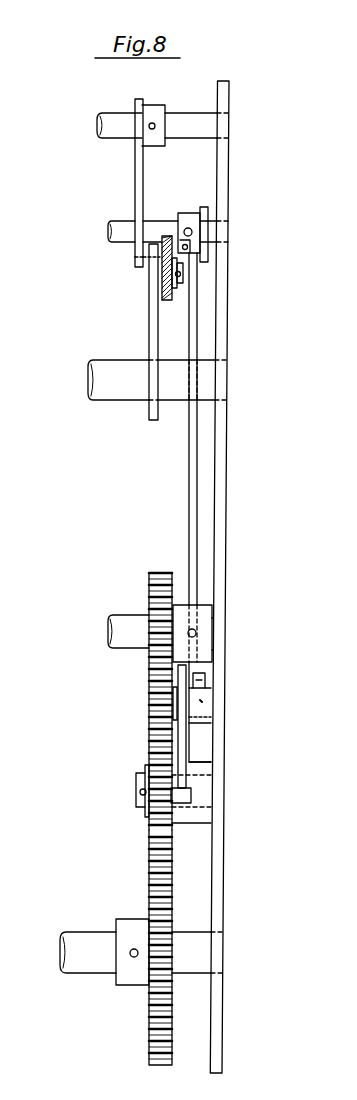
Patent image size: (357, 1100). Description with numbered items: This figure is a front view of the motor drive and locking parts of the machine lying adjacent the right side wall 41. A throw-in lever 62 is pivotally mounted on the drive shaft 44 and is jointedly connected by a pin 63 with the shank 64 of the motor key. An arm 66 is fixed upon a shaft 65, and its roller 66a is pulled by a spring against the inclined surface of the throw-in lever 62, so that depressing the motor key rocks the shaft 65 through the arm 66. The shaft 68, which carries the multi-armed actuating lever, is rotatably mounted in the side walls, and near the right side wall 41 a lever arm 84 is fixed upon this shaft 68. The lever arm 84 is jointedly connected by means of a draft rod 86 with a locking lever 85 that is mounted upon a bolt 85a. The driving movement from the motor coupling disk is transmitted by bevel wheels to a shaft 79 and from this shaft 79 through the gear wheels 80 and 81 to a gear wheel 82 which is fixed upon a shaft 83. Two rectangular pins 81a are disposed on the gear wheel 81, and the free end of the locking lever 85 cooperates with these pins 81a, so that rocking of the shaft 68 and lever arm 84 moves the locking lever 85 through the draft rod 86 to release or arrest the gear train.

The side wall 41 is at (220, 503).
The drive shaft 44 is at (125, 392).
The throw-in lever 62 is at (148, 337).
The pin 63 is at (183, 280).
The shank 64 is at (172, 295).
The shaft 65 is at (110, 125).
The arm 66 is at (138, 190).
The roller 66a is at (145, 255).
The shaft 68 is at (110, 234).
The shaft 79 is at (128, 637).
The gear wheel 80 is at (150, 588).
The gear wheel 81 is at (150, 828).
The rectangular pins 81a is at (185, 797).
The gear wheel 82 is at (150, 1017).
The shaft 83 is at (88, 960).
The lever arm 84 is at (204, 213).
The locking lever 85 is at (182, 742).
The bolt 85a is at (202, 709).
The draft rod 86 is at (195, 482).